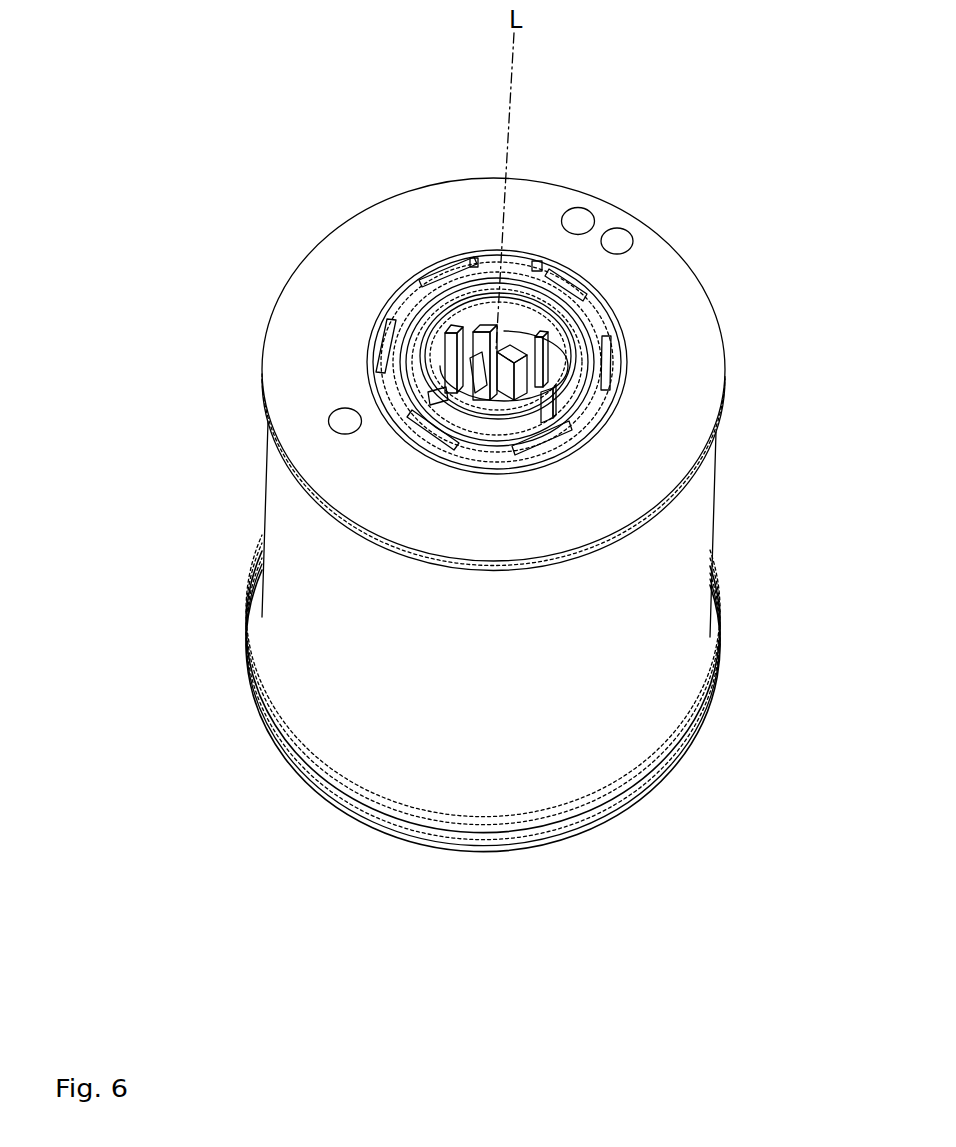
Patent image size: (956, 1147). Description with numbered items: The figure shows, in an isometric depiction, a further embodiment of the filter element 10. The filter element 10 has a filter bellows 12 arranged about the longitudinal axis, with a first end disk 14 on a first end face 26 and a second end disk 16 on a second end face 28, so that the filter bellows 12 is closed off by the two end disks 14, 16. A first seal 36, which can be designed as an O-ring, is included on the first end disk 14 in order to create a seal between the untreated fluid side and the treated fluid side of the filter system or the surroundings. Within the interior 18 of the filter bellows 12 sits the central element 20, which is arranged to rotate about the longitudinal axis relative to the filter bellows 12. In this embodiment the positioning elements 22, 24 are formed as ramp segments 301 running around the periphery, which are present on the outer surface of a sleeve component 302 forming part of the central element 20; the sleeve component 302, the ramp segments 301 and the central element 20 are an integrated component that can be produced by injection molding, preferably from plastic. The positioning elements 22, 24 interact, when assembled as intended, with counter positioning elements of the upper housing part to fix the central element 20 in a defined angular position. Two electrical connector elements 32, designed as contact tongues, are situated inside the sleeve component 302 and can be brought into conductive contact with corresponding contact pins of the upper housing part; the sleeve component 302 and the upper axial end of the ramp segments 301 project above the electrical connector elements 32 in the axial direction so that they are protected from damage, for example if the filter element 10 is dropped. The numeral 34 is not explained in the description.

The filter element 10 is at (497, 552).
The filter bellows 12 is at (285, 515).
The first end disk 14 is at (440, 750).
The second end disk 16 is at (300, 278).
The interior of the filter bellows 18 is at (540, 274).
The central element 20 is at (535, 330).
The positioning element 22 is at (460, 285).
The positioning element 24 is at (537, 420).
The first end face 26 is at (316, 806).
The second end face 28 is at (366, 218).
The electrical connector elements 32 is at (493, 337).
The recess wall 34 is at (578, 343).
The first seal 36 is at (428, 842).
The ramp segments 301 is at (513, 322).
The sleeve component 302 is at (445, 397).